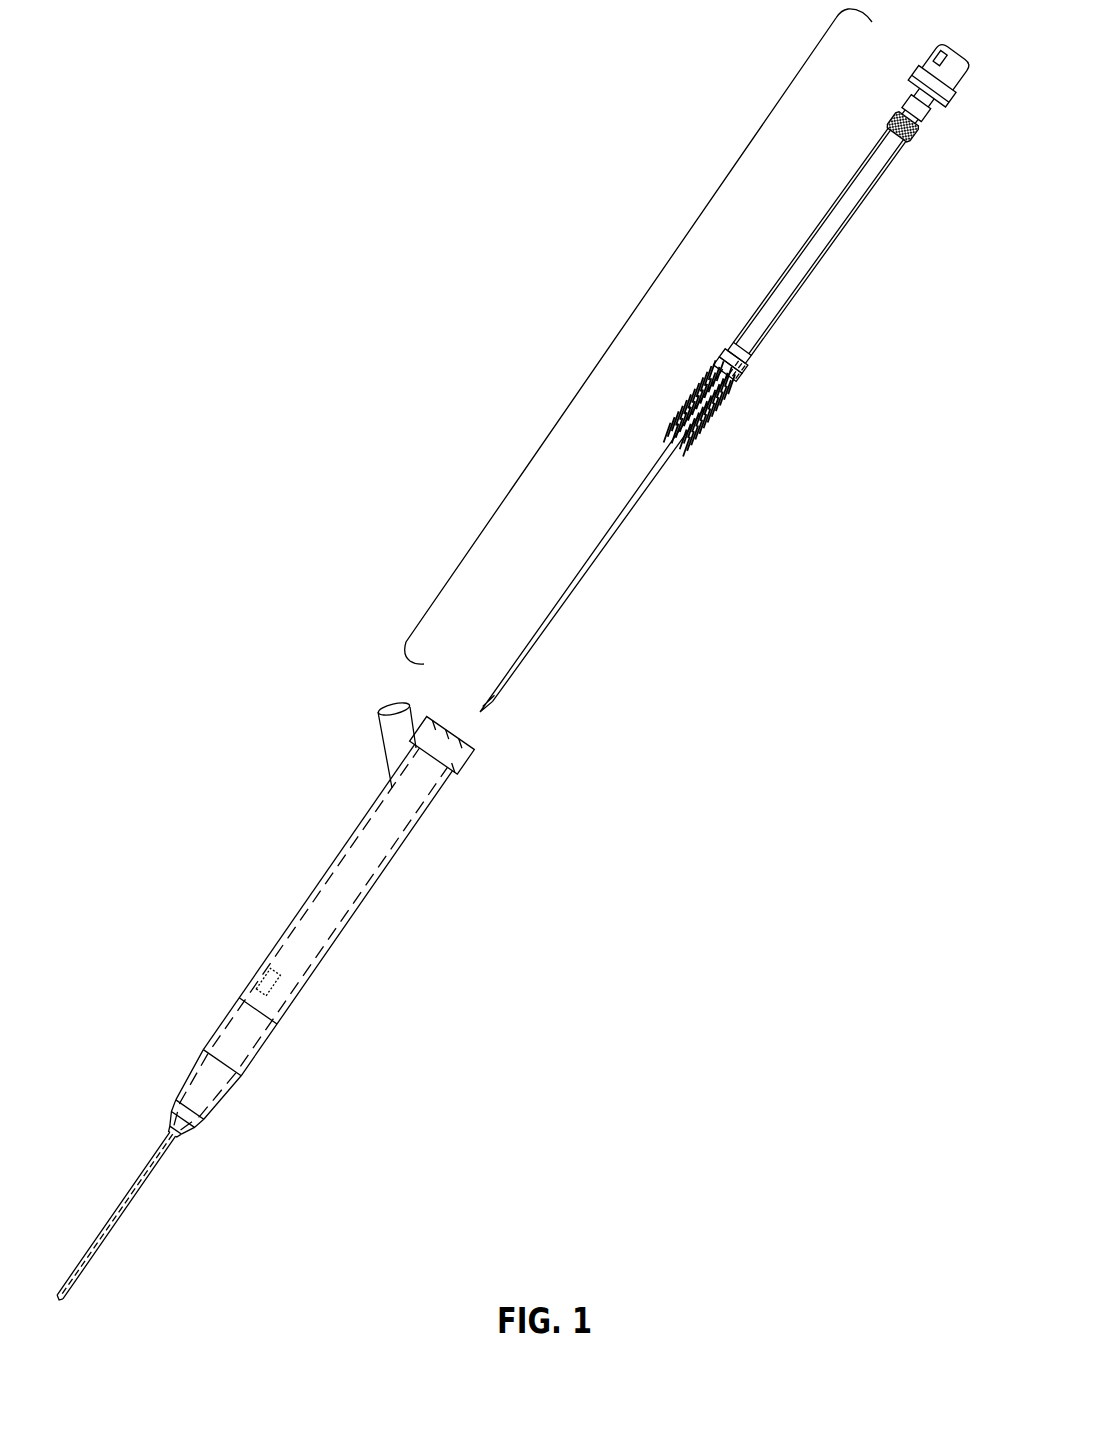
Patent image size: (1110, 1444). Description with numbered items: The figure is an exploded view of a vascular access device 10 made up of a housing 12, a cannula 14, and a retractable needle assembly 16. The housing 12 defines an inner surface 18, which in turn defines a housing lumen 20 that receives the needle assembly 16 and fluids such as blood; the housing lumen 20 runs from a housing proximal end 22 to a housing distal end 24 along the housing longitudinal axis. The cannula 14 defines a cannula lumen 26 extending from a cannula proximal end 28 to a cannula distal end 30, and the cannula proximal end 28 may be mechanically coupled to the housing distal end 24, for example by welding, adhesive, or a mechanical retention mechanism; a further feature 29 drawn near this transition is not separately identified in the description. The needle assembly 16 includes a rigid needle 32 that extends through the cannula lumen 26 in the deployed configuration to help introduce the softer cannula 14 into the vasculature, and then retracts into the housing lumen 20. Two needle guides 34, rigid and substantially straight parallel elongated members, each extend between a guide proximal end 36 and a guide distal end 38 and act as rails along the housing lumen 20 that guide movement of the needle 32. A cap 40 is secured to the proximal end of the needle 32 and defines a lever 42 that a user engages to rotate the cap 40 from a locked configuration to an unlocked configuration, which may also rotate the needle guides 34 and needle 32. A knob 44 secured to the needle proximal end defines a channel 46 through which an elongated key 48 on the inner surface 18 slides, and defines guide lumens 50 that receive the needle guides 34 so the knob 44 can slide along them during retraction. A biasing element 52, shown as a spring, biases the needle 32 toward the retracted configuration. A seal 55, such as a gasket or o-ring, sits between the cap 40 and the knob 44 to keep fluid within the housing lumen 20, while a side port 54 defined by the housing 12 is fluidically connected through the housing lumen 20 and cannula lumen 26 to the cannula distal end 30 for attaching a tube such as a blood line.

The device 10 is at (220, 80).
The housing 12 is at (350, 833).
The cannula 14 is at (120, 1208).
The retractable needle assembly 16 is at (620, 331).
The inner surface 18 is at (397, 840).
The housing lumen 20 is at (350, 893).
The housing proximal end 22 is at (475, 742).
The housing distal end 24 is at (170, 1148).
The cannula lumen 26 is at (115, 1230).
The cannula proximal end 28 is at (162, 1152).
The transition section 29 is at (195, 1068).
The cannula distal end 30 is at (63, 1303).
The needle 32 is at (605, 546).
The needle guide 34 is at (842, 235).
The guide proximal end 36 is at (930, 112).
The guide distal end 38 is at (751, 369).
The cap 40 is at (915, 68).
The lever 42 is at (938, 52).
The knob 44 is at (722, 356).
The channel 46 is at (735, 345).
The elongated key 48 is at (266, 975).
The guide lumen 50 is at (755, 373).
The biasing element 52 is at (712, 420).
The side port 54 is at (378, 716).
The seal 55 is at (897, 116).